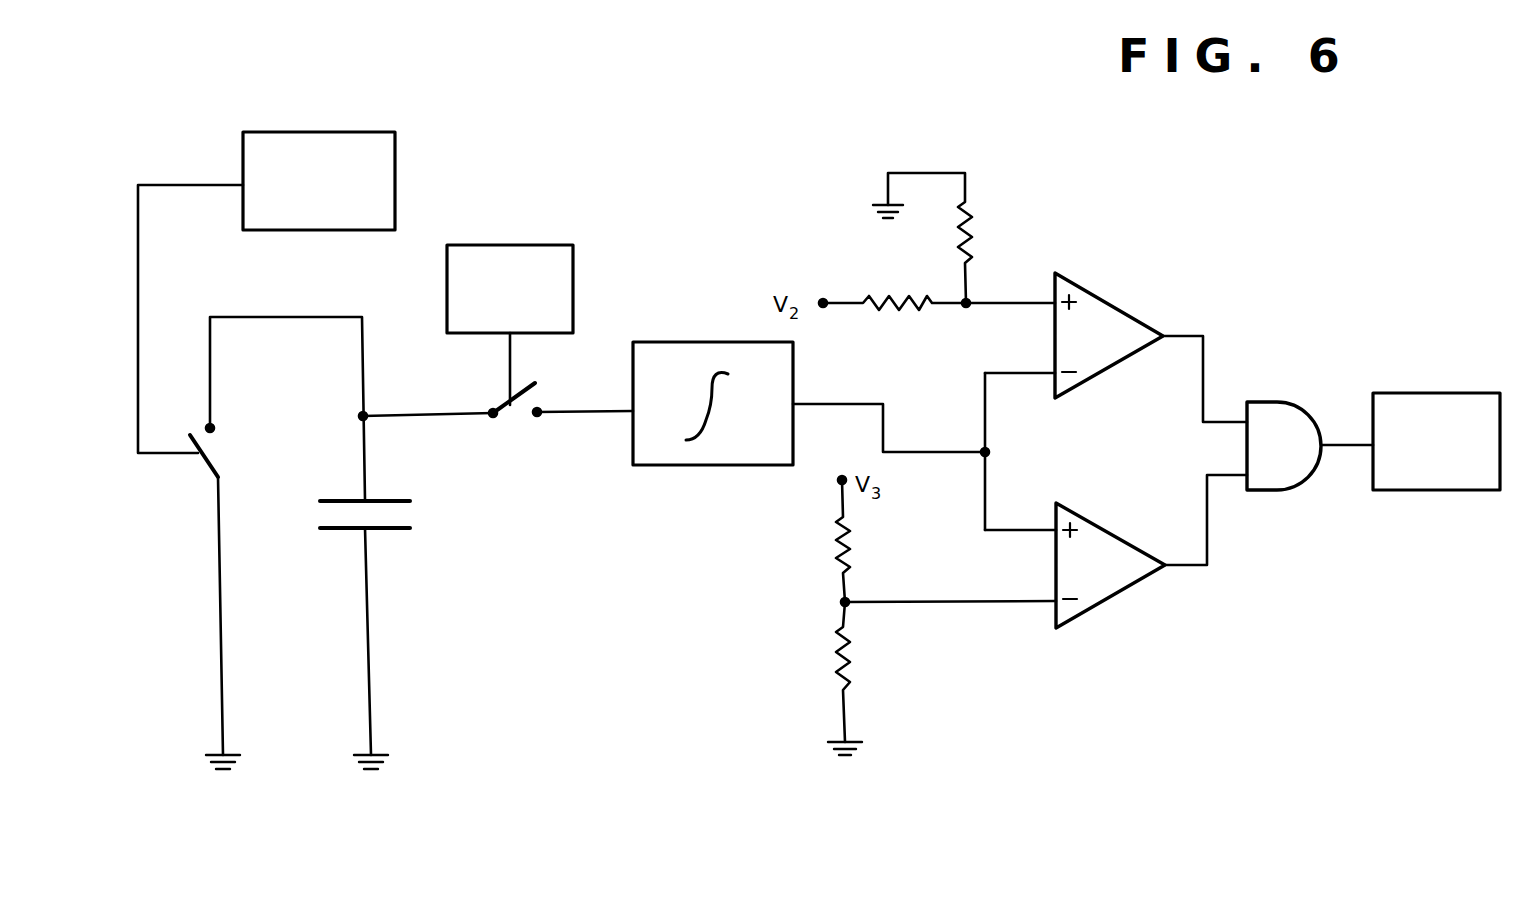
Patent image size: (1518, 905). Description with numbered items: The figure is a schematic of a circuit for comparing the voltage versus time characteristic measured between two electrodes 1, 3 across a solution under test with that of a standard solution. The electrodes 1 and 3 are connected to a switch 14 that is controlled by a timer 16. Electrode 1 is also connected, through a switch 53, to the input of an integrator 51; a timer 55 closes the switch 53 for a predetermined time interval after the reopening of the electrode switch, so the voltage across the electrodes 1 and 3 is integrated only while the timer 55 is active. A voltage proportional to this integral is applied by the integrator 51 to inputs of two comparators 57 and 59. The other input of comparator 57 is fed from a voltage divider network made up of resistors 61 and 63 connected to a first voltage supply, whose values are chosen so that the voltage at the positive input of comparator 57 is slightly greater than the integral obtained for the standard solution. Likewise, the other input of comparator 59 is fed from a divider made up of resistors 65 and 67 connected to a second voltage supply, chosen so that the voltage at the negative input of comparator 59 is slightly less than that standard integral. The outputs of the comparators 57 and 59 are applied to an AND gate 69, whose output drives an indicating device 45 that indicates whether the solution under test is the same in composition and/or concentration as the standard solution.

The electrode 1 is at (338, 498).
The electrode 3 is at (342, 531).
The switch 14 is at (202, 468).
The timer 16 is at (340, 132).
The indicating device 45 is at (1415, 490).
The integrator 51 is at (727, 342).
The switch 53 is at (530, 391).
The timer 55 is at (473, 245).
The comparator 57 is at (1097, 295).
The comparator 59 is at (1151, 574).
The resistor 61 is at (968, 240).
The resistor 63 is at (912, 306).
The resistor 65 is at (838, 548).
The resistor 67 is at (842, 665).
The AND gate 69 is at (1268, 402).